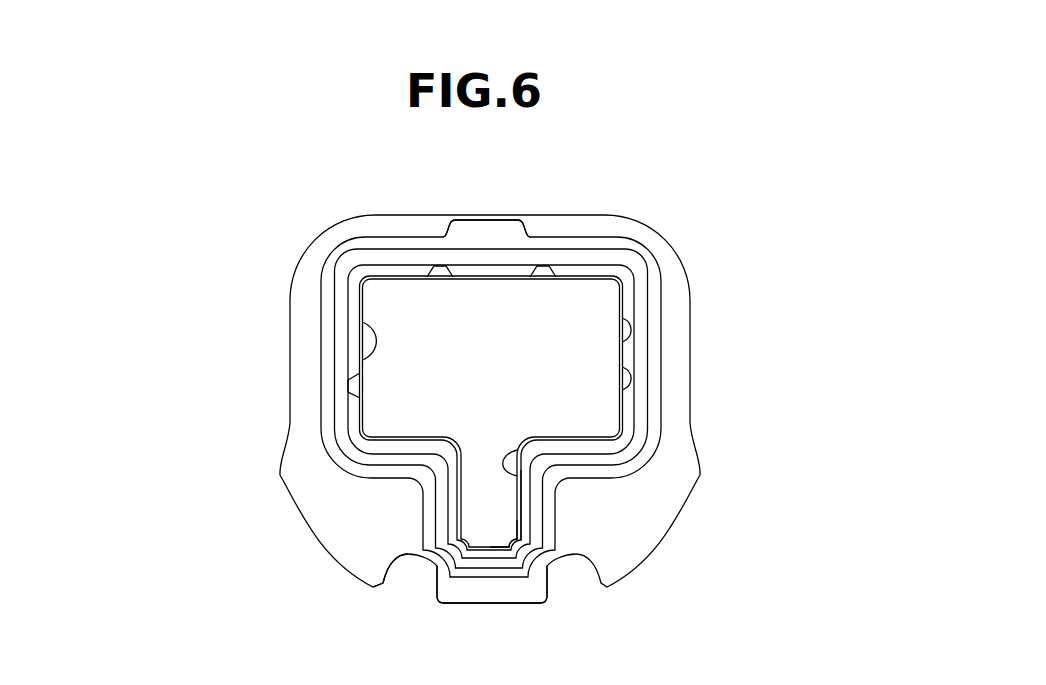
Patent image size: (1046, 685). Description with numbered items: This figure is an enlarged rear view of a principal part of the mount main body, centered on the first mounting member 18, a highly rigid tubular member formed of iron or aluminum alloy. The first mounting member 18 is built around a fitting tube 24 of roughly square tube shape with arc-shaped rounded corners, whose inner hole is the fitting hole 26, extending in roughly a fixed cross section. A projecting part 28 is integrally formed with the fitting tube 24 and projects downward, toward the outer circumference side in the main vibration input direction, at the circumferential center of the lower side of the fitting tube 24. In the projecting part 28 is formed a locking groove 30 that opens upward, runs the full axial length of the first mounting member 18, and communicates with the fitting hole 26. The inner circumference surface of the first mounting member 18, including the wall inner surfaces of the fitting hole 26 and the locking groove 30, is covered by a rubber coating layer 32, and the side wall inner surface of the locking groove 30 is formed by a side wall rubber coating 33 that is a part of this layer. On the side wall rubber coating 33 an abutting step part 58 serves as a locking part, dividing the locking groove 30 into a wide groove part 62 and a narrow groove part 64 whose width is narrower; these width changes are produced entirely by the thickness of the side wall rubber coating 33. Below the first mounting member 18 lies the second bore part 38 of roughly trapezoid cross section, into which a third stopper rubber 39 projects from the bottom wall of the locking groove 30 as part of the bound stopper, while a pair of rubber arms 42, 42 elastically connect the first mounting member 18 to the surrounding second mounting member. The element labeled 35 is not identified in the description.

The first mounting member 18 is at (424, 398).
The fitting tube 24 is at (340, 403).
The fitting hole 26 is at (374, 344).
The projecting part 28 is at (440, 525).
The locking groove 30 is at (517, 539).
The rubber coating layer 32 is at (582, 266).
The side wall rubber coating 33 is at (456, 505).
The tab 35 is at (492, 232).
The second bore part 38 is at (391, 586).
The third stopper rubber 39 is at (463, 594).
The rubber arm 42 is at (337, 542).
The abutting step part 58 is at (466, 486).
The wide groove part 62 is at (523, 494).
The narrow groove part 64 is at (503, 447).